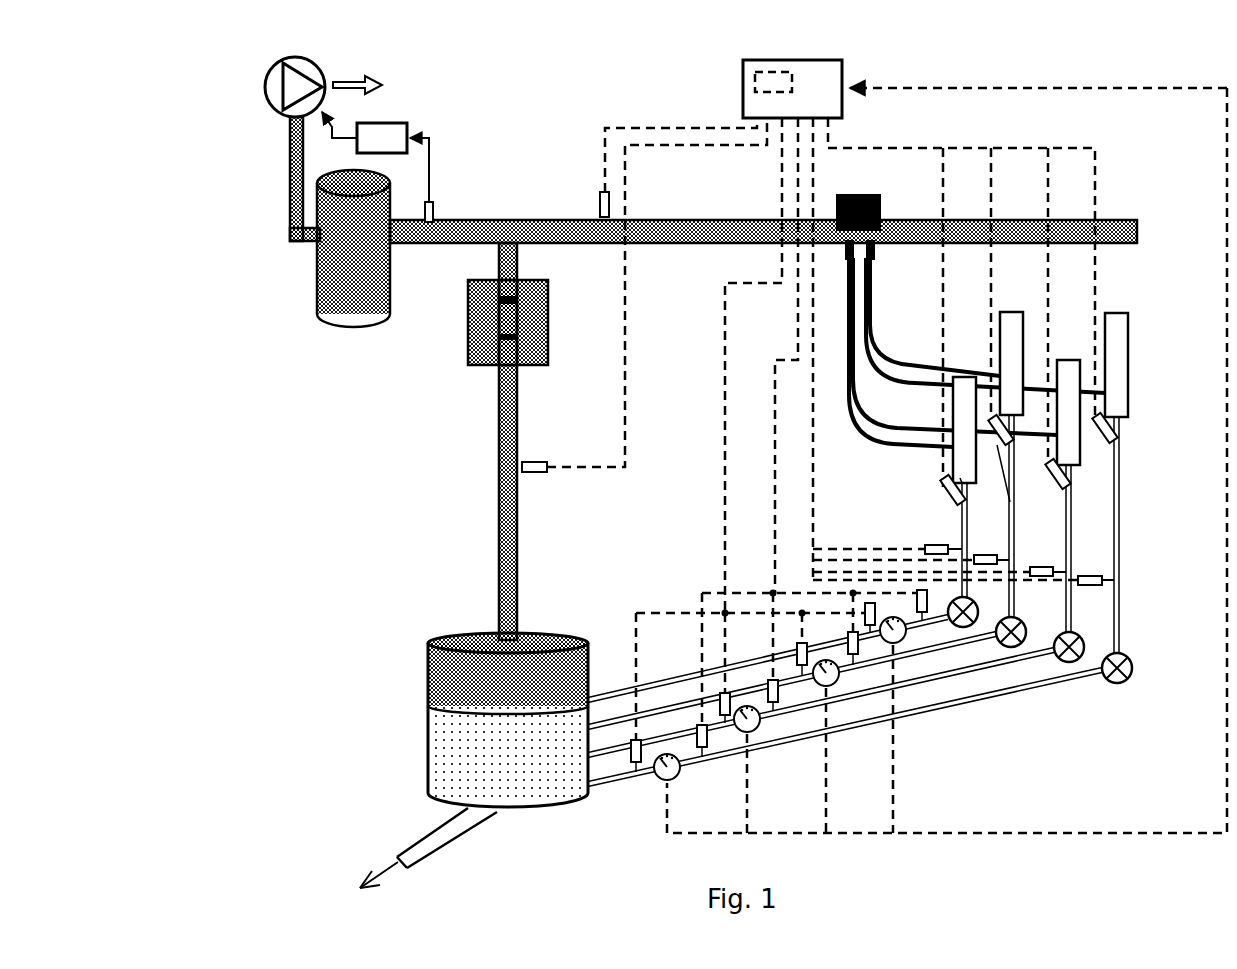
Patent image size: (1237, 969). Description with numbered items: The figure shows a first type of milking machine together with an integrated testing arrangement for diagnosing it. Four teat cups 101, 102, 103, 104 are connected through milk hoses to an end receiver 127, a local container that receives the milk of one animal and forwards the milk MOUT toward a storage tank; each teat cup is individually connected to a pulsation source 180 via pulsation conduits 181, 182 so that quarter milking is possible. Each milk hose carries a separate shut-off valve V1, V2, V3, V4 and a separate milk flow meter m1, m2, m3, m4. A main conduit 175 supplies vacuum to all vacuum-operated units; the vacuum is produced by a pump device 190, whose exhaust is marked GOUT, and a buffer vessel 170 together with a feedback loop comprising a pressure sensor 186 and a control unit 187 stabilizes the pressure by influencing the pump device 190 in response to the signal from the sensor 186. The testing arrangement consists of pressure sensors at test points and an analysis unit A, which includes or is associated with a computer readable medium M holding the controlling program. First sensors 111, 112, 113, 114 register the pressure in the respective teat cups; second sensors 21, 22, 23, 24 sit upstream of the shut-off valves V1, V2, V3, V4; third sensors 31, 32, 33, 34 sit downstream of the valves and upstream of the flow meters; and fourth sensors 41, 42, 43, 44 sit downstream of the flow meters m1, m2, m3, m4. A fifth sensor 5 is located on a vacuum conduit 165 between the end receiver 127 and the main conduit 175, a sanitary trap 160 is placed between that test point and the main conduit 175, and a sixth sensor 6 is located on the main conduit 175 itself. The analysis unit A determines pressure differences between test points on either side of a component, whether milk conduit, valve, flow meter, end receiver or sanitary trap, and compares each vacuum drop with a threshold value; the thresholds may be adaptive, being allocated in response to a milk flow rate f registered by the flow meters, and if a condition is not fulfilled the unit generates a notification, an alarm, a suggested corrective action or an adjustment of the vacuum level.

The pump device 190 is at (265, 90).
The control unit 187 is at (407, 128).
The pressure sensor 186 is at (433, 202).
The main conduit 175 is at (555, 220).
The sixth sensor 6 is at (600, 198).
The buffer vessel 170 is at (337, 327).
The sanitary trap 160 is at (548, 315).
The vacuum conduit 165 is at (500, 412).
The fifth sensor 5 is at (537, 461).
The end receiver 127 is at (428, 682).
The pulsation source 180 is at (873, 195).
The pulsation conduit 182 is at (873, 287).
The pulsation conduit 181 is at (890, 422).
The teat cup 101 is at (965, 378).
The teat cup 102 is at (1018, 312).
The teat cup 103 is at (1068, 360).
The teat cup 104 is at (1130, 358).
The first sensor 111 is at (945, 490).
The first sensor 112 is at (1014, 512).
The first sensor 113 is at (1063, 477).
The first sensor 114 is at (1107, 433).
The second sensor 21 is at (943, 545).
The second sensor 22 is at (1000, 555).
The second sensor 23 is at (1045, 567).
The second sensor 24 is at (1094, 577).
The third sensor 31 is at (930, 620).
The third sensor 32 is at (863, 663).
The third sensor 33 is at (775, 717).
The third sensor 34 is at (700, 757).
The fourth sensor 41 is at (870, 603).
The fourth sensor 42 is at (800, 648).
The fourth sensor 43 is at (722, 693).
The fourth sensor 44 is at (636, 740).
The shut-off valve V1 is at (973, 604).
The shut-off valve V2 is at (1021, 624).
The shut-off valve V3 is at (1079, 639).
The shut-off valve V4 is at (1127, 660).
The milk flow meter m1 is at (905, 645).
The milk flow meter m2 is at (830, 690).
The milk flow meter m3 is at (752, 737).
The milk flow meter m4 is at (672, 783).
The computer readable medium M is at (757, 73).
The analysis unit A is at (743, 107).
The milk flow rate f is at (947, 444).
The gas outlet GOUT is at (367, 71).
The milk MOUT is at (323, 869).